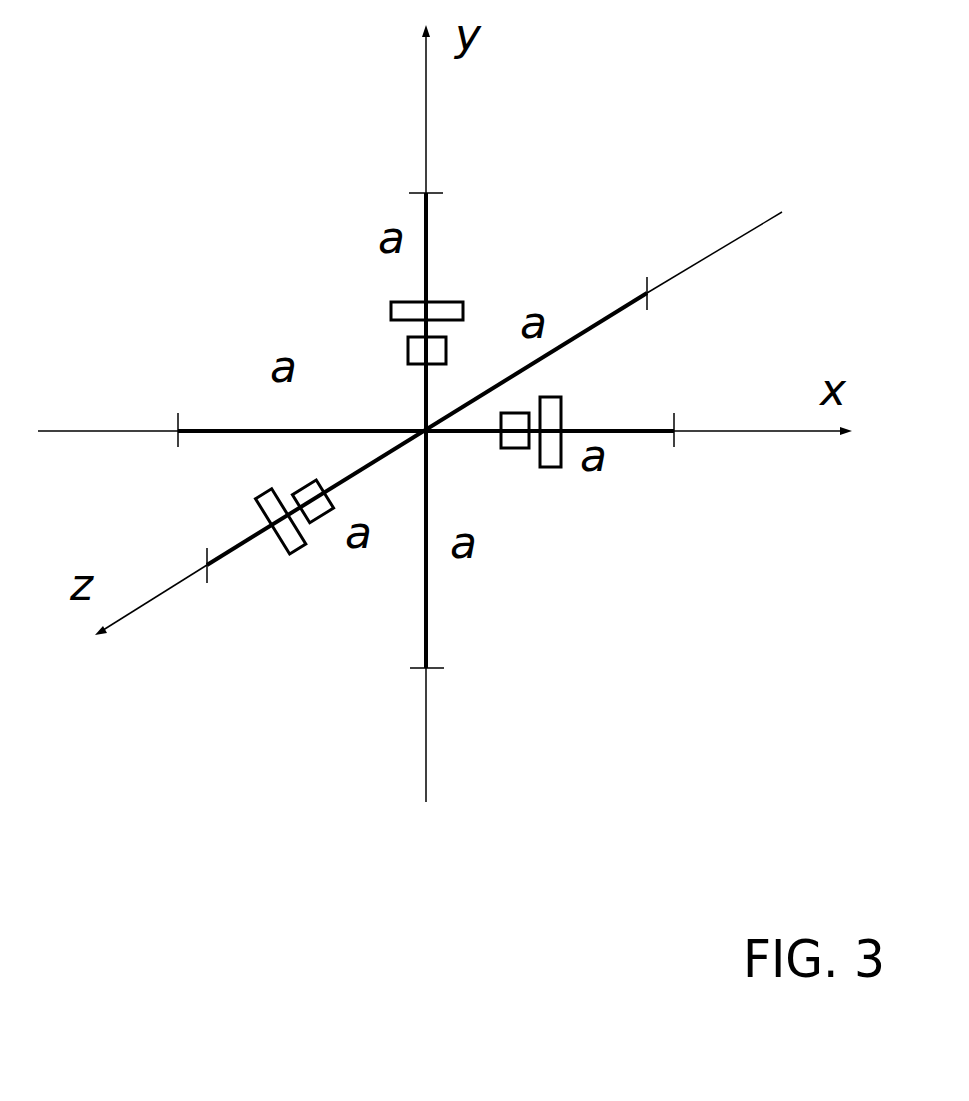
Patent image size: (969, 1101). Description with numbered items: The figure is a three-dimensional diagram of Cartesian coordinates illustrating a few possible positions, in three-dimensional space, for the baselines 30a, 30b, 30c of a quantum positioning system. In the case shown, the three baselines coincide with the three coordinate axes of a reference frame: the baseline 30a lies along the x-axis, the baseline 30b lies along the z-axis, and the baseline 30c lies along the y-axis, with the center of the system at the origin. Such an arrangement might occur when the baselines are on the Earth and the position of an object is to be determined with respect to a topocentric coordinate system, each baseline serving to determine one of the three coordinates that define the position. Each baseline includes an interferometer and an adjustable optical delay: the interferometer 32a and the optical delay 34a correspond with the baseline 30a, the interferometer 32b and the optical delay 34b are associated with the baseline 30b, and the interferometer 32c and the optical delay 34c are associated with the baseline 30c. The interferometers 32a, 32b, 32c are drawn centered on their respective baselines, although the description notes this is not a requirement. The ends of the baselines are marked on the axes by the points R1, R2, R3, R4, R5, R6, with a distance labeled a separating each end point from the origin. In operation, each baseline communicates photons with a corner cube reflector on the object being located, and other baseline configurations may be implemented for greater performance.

The baseline 30a is at (228, 433).
The baseline 30b is at (612, 318).
The baseline 30c is at (424, 620).
The interferometer 32a is at (515, 450).
The interferometer 32b is at (304, 480).
The interferometer 32c is at (407, 356).
The adjustable optical delay 34a is at (552, 467).
The adjustable optical delay 34b is at (298, 548).
The adjustable optical delay 34c is at (390, 308).
The reference point R1 is at (178, 414).
The reference point R2 is at (684, 407).
The reference point R3 is at (461, 667).
The reference point R4 is at (460, 194).
The reference point R5 is at (638, 271).
The reference point R6 is at (213, 589).